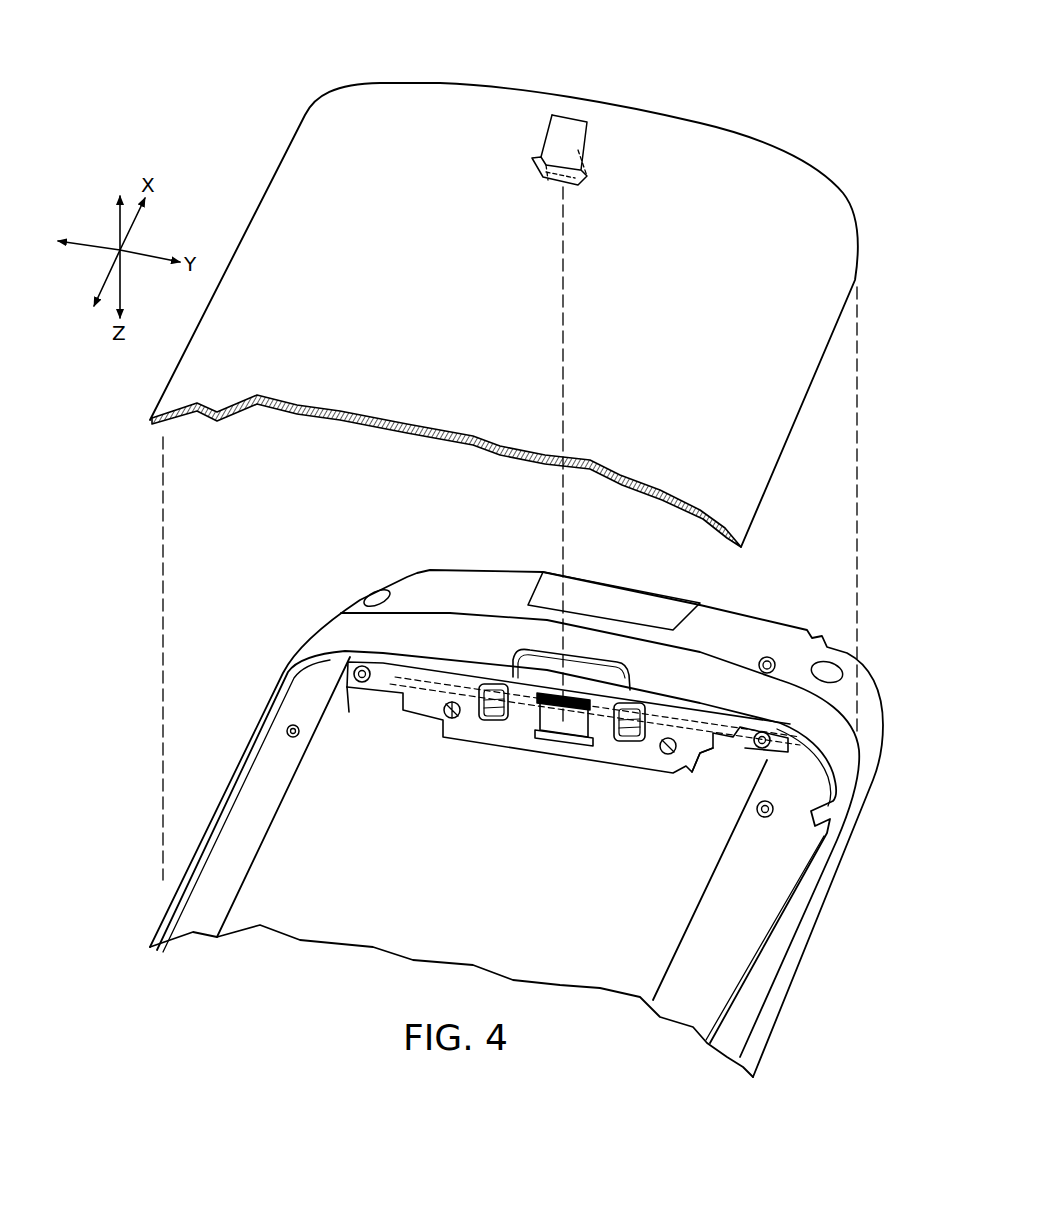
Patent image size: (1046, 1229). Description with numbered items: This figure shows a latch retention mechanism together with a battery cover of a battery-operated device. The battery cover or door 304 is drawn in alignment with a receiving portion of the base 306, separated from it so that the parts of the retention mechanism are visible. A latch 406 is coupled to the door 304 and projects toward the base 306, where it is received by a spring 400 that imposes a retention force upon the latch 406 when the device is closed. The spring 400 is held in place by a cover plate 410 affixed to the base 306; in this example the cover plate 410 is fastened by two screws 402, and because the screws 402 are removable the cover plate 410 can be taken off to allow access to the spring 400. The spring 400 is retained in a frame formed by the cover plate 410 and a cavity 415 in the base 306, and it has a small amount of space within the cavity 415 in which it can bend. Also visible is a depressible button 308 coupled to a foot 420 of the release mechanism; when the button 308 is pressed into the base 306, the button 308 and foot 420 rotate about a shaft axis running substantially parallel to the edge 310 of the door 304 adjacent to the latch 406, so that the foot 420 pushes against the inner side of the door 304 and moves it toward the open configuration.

The edge 310 is at (517, 444).
The door 304 is at (784, 185).
The latch 406 is at (589, 135).
The base 306 is at (310, 648).
The screws 402 is at (361, 666).
The depressible button 308 is at (540, 655).
The spring 400 is at (575, 695).
The cavity 415 is at (672, 705).
The foot 420 is at (628, 742).
The cover plate 410 is at (700, 757).